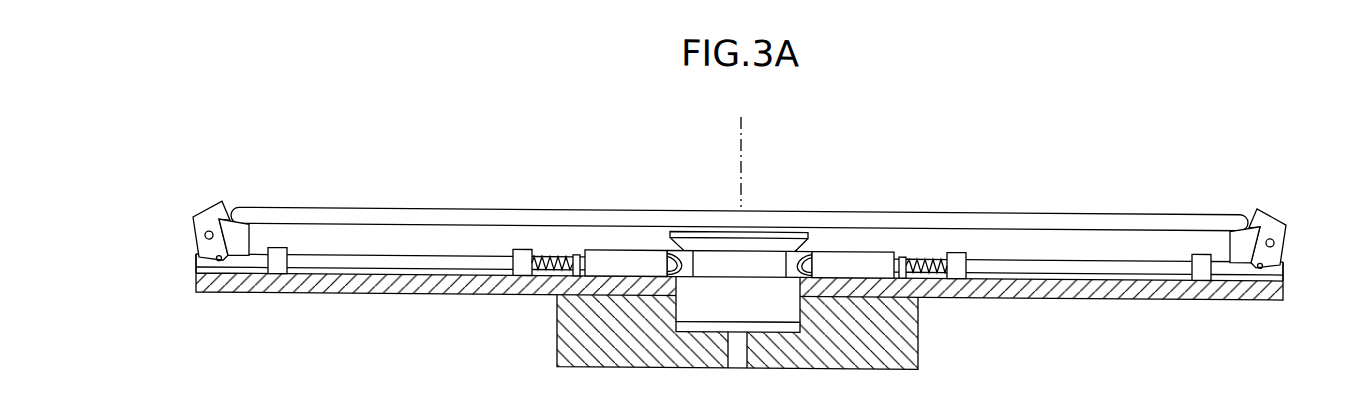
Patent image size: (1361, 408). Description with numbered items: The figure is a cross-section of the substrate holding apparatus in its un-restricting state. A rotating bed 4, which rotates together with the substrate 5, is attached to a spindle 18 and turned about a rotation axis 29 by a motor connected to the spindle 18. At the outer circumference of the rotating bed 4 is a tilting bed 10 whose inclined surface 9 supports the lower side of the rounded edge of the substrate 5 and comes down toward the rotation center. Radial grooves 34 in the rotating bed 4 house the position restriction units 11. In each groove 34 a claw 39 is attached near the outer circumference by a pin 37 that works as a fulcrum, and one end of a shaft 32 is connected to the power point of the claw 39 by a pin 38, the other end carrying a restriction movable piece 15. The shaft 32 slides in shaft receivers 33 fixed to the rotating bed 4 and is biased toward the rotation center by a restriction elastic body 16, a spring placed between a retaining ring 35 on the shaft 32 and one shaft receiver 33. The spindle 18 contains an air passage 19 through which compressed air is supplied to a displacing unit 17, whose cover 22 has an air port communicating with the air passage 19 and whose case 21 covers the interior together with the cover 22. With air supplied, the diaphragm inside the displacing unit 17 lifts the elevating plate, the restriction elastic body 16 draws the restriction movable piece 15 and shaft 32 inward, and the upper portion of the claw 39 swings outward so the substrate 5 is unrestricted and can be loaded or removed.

The rotating bed 4 is at (193, 252).
The substrate 5 is at (440, 215).
The inclined surface 9 is at (230, 220).
The tilting bed 10 is at (240, 243).
The position restriction unit 11 is at (923, 130).
The restriction movable piece 15 is at (634, 258).
The restriction elastic body 16 is at (552, 254).
The displacing unit 17 is at (752, 243).
The spindle 18 is at (570, 330).
The air passage 19 is at (745, 344).
The case 21 is at (722, 289).
The cover 22 is at (695, 323).
The rotation axis 29 is at (742, 128).
The shaft 32 is at (390, 248).
The shaft receiver 33 is at (277, 247).
The groove 34 is at (340, 240).
The retaining ring 35 is at (576, 251).
The pin 37 is at (198, 232).
The pin 38 is at (198, 262).
The claw 39 is at (207, 203).